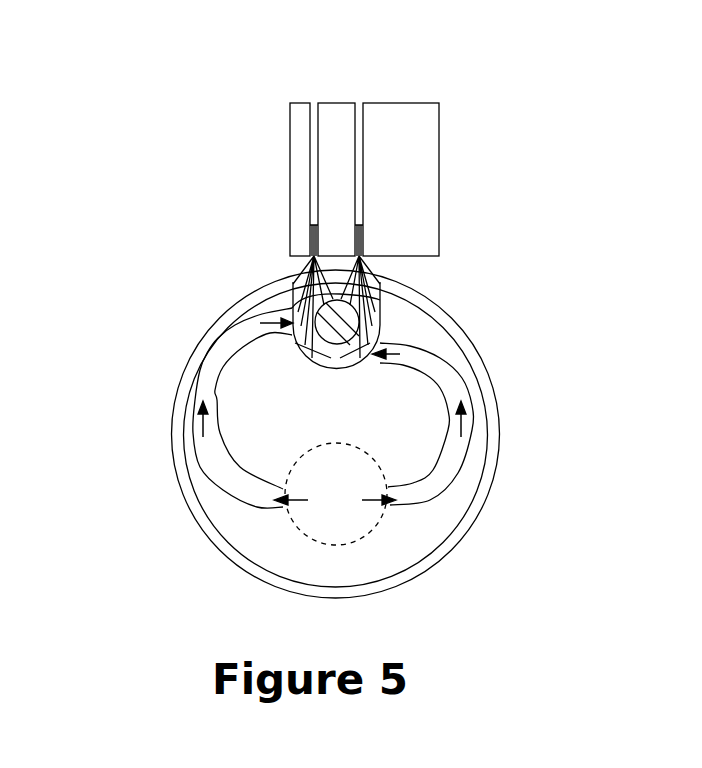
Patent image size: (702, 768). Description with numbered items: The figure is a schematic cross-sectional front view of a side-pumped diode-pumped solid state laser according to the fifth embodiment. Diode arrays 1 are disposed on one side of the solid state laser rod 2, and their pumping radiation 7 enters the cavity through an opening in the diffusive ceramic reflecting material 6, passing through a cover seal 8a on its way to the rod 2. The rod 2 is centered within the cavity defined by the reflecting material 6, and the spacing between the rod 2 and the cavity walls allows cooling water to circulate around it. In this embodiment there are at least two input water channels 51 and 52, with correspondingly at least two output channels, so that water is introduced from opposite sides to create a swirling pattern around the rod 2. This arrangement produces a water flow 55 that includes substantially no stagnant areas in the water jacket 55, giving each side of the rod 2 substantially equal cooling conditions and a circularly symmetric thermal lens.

The diode arrays 1 is at (305, 112).
The solid state laser rod 2 is at (340, 322).
The diffusive ceramic reflecting material 6 is at (266, 380).
The pumping radiation 7 is at (297, 278).
The cover seal 8a is at (238, 302).
The input water channel 51 is at (210, 378).
The input water channel 52 is at (450, 380).
The water flow / water jacket 55 is at (338, 368).